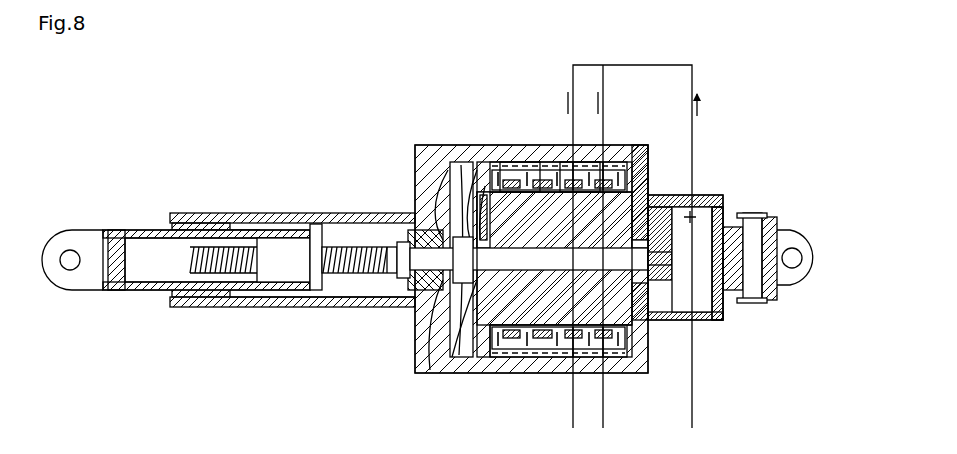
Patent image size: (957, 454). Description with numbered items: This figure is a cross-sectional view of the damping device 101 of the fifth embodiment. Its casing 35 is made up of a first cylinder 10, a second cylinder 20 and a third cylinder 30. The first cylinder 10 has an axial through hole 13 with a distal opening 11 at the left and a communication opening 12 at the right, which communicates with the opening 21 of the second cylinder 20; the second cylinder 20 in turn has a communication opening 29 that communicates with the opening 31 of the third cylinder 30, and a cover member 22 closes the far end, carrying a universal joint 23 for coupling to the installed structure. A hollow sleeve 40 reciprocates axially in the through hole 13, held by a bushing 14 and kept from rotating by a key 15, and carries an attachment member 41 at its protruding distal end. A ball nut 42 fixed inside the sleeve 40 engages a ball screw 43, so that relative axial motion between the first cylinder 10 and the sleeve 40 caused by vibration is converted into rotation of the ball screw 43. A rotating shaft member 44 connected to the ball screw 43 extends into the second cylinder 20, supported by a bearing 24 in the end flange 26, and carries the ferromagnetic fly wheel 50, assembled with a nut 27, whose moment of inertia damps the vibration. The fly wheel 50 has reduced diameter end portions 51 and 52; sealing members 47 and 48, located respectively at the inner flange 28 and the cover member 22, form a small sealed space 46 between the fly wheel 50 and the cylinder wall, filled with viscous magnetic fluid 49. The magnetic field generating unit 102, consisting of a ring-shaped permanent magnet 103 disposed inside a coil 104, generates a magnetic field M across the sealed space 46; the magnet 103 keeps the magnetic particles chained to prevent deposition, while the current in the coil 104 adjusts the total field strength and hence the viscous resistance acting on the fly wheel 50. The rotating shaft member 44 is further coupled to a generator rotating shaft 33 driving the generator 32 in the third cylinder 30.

The first cylinder 10 is at (248, 212).
The distal opening 11 is at (168, 229).
The communication opening 12 is at (392, 280).
The axial through hole 13 is at (338, 232).
The bushing 14 is at (182, 223).
The key 15 is at (312, 307).
The second cylinder 20 is at (548, 160).
The opening 21 is at (462, 161).
The cover member 22 is at (650, 148).
The universal joint 23 is at (795, 230).
The bearing 24 is at (420, 292).
The end flange 26 is at (422, 186).
The nut 27 is at (432, 352).
The inner flange 28 is at (485, 186).
The communication opening 29 is at (632, 272).
The third cylinder 30 is at (705, 194).
The opening 31 is at (702, 285).
The generator 32 is at (716, 295).
The generator rotating shaft 33 is at (663, 252).
The casing 35 is at (428, 144).
The sleeve 40 is at (150, 293).
The attachment member 41 is at (88, 232).
The ball nut 42 is at (284, 246).
The ball screw 43 is at (348, 255).
The rotating shaft member 44 is at (646, 176).
The sealed space 46 is at (585, 268).
The sealing member 47 is at (447, 372).
The sealing member 48 is at (655, 201).
The viscous magnetic fluid 49 is at (612, 262).
The fly wheel 50 is at (630, 346).
The reduced diameter end portion 51 is at (492, 358).
The reduced diameter end portion 52 is at (641, 320).
The damping device 101 is at (736, 116).
The magnetic field generating unit 102 is at (600, 162).
The permanent magnet 103 is at (534, 193).
The coil 104 is at (585, 193).
The magnetic field M is at (614, 160).